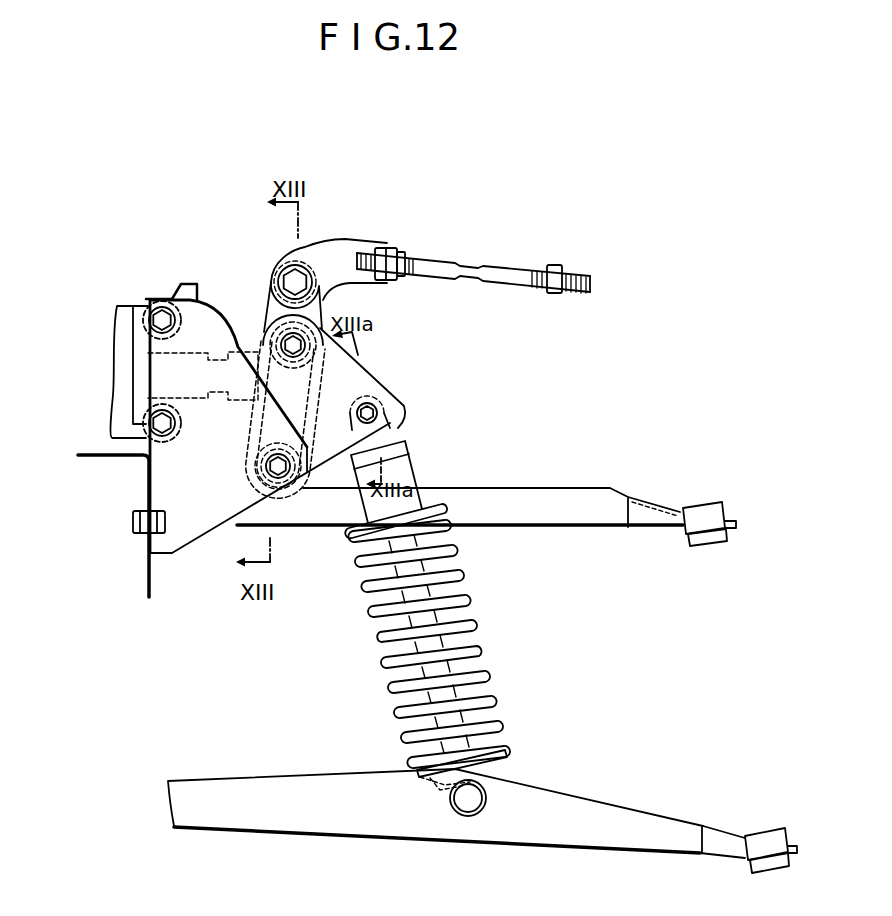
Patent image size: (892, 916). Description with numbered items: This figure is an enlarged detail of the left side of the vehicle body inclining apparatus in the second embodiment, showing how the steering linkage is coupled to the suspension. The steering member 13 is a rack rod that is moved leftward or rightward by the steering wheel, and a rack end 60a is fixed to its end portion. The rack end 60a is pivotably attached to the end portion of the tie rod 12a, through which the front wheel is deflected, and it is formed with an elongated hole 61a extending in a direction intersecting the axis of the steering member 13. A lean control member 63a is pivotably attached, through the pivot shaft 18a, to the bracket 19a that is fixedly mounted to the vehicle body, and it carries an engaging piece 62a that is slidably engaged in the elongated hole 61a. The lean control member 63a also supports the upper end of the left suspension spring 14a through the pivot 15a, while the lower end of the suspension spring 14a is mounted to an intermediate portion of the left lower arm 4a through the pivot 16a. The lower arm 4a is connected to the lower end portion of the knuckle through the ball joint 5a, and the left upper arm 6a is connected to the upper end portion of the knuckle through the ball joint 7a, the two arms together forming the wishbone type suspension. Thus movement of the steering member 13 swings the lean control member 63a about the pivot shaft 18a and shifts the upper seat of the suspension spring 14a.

The steering member 13 is at (165, 376).
The rack end 60a is at (232, 338).
The elongated hole 61a is at (280, 370).
The engaging piece 62a is at (271, 322).
The lean control member 63a is at (369, 383).
The tie rod 12a is at (487, 268).
The pivot 15a is at (378, 413).
The pivot shaft 18a is at (290, 480).
The bracket 19a is at (204, 531).
The left suspension spring 14a is at (478, 645).
The left upper arm 6a is at (551, 524).
The ball joint 7a is at (706, 503).
The pivot 16a is at (483, 795).
The left lower arm 4a is at (548, 836).
The ball joint 5a is at (770, 828).